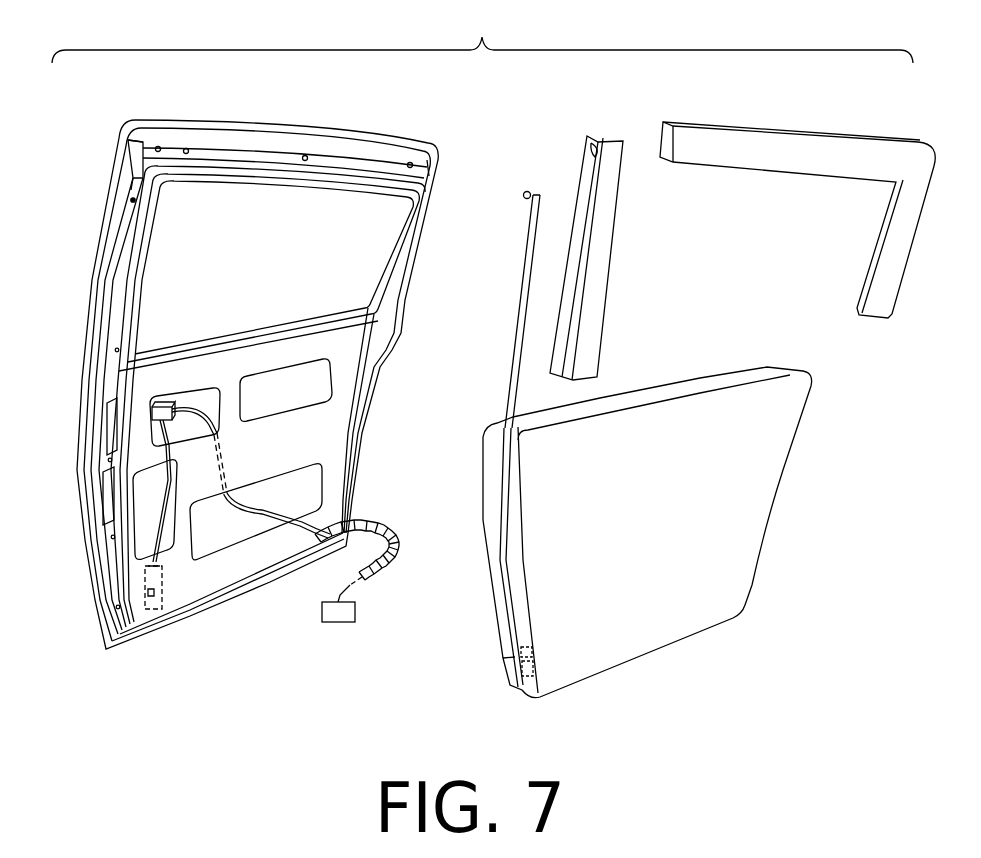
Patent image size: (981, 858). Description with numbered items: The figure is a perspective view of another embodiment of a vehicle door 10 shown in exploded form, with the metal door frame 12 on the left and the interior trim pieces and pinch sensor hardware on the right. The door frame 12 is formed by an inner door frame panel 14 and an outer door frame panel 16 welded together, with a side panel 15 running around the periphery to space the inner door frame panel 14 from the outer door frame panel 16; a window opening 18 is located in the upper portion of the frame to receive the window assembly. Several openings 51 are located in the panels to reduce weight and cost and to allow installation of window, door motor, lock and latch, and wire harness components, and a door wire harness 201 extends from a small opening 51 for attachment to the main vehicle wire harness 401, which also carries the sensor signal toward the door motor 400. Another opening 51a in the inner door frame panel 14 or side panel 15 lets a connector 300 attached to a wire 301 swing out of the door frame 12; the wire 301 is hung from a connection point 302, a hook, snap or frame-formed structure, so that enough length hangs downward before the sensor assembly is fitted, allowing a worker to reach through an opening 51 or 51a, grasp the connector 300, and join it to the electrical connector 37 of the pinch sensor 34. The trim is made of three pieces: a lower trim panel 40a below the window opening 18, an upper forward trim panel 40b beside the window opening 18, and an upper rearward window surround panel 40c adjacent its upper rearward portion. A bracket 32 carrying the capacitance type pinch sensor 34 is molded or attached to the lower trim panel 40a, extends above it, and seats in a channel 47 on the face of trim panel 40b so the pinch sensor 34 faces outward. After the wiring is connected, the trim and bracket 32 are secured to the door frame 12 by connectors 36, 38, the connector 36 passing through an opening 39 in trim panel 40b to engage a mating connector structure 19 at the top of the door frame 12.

The door 10 is at (482, 36).
The door frame 12 is at (442, 155).
The inner door frame panel 14 is at (347, 352).
The side panel 15 is at (125, 200).
The outer door frame panel 16 is at (130, 150).
The window opening 18 is at (202, 233).
The mating connector structure 19 is at (133, 204).
The bracket 32 is at (512, 352).
The pinch sensor 34 is at (507, 657).
The connector 36 is at (528, 192).
The electrical connector 37 is at (532, 648).
The connector 38 is at (533, 668).
The opening 39 is at (590, 148).
The lower trim panel 40a is at (629, 532).
The upper forward trim panel 40b is at (608, 245).
The upper rearward window surround panel 40c is at (820, 145).
The channel 47 is at (573, 287).
The openings 51 is at (202, 390).
The opening 51a is at (105, 490).
The door wire harness 201 is at (430, 520).
The connector 300 is at (157, 609).
The wire 301 is at (153, 518).
The connection point 302 is at (160, 402).
The door motor 400 is at (339, 623).
The main vehicle wire harness 401 is at (340, 585).